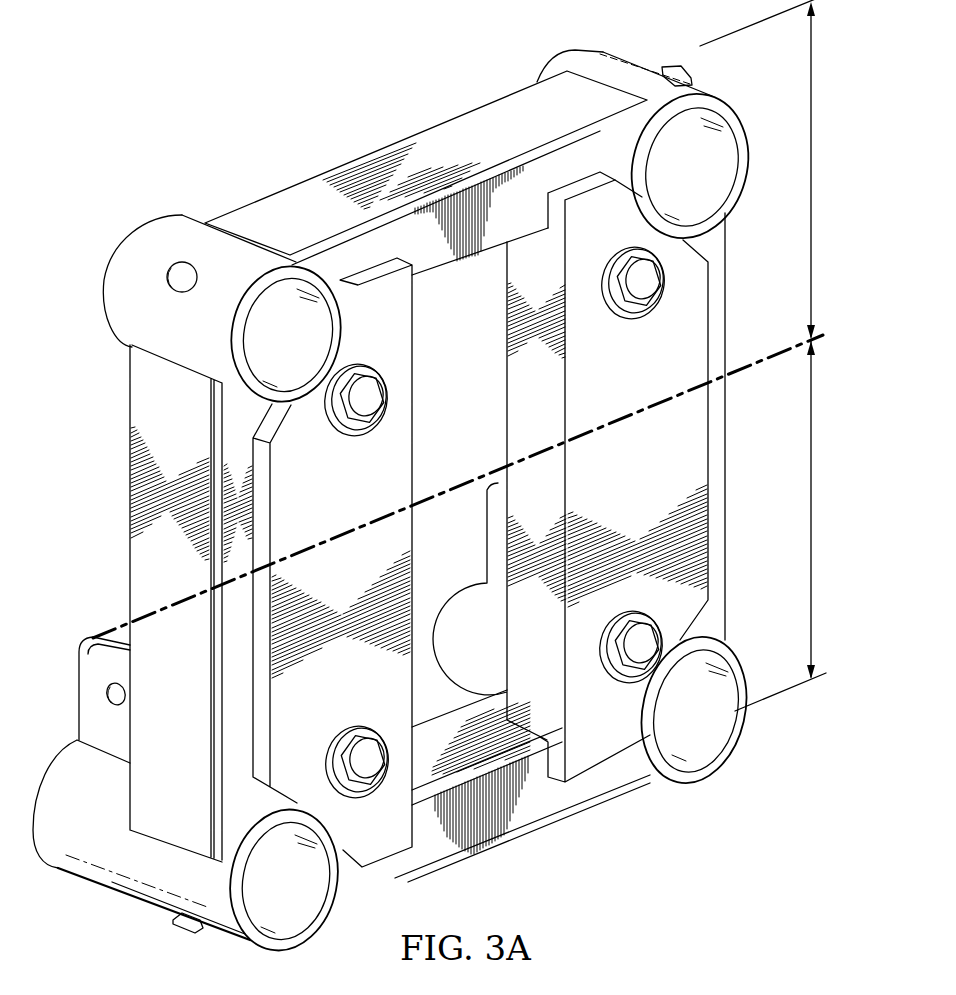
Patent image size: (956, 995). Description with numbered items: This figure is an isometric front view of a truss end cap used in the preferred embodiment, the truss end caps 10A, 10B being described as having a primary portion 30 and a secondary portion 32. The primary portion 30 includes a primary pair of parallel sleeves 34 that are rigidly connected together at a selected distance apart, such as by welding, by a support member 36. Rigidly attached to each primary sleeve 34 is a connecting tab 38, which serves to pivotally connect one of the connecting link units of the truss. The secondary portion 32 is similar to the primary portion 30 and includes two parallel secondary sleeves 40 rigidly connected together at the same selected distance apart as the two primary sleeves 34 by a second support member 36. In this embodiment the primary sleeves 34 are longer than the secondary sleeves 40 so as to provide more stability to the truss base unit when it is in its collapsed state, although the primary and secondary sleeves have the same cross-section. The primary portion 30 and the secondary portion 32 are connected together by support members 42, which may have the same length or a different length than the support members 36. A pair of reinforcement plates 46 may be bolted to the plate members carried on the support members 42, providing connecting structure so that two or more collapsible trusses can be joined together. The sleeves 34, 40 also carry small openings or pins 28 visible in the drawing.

The truss end cap 10A is at (448, 494).
The truss end cap 10B is at (318, 113).
The pin hole / pin 28 is at (174, 266).
The primary portion 30 is at (811, 512).
The secondary portion 32 is at (813, 170).
The primary sleeve 34 is at (105, 881).
The support member 36 is at (437, 135).
The connecting tab 38 is at (91, 685).
The secondary sleeve 40 is at (143, 250).
The support member 42 is at (141, 569).
The reinforcement plate 46 is at (400, 345).